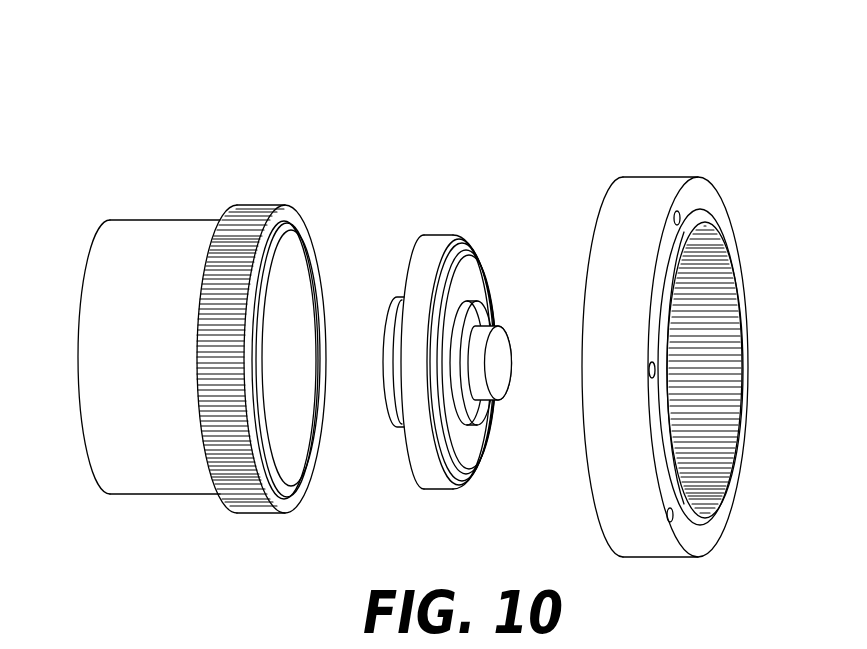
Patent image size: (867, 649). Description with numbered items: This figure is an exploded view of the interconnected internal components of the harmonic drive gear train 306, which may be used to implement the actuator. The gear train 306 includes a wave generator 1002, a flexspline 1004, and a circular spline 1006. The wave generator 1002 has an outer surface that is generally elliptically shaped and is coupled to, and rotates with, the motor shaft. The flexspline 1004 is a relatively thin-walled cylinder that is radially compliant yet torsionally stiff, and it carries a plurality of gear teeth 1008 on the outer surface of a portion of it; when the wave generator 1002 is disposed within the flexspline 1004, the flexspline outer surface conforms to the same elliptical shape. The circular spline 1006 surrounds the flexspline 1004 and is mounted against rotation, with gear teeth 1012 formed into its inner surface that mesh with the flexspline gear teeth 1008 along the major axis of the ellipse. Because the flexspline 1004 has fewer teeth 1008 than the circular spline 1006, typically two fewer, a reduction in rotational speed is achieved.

The harmonic drive gear train 306 is at (619, 84).
The flexspline 1004 is at (160, 220).
The gear teeth 1008 is at (256, 205).
The wave generator 1002 is at (442, 193).
The circular spline 1006 is at (706, 180).
The gear teeth 1012 is at (788, 283).